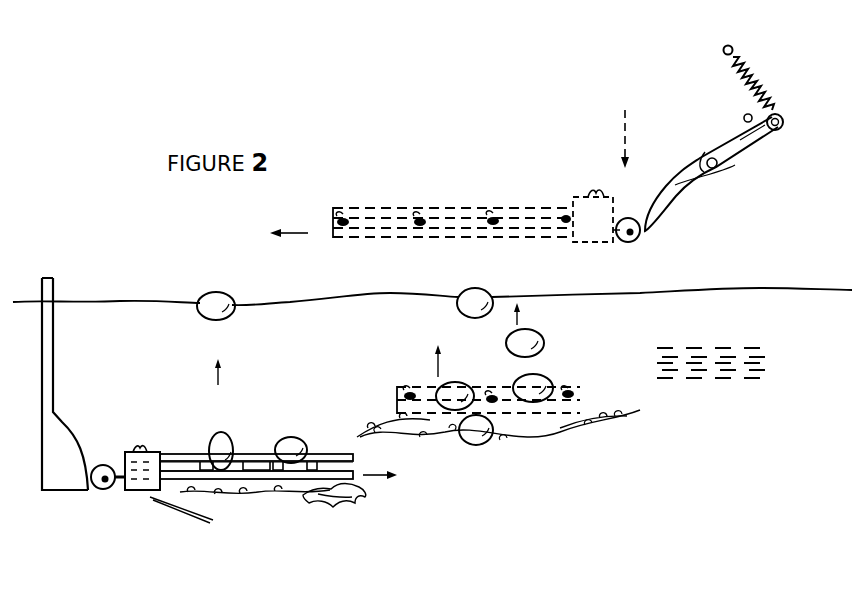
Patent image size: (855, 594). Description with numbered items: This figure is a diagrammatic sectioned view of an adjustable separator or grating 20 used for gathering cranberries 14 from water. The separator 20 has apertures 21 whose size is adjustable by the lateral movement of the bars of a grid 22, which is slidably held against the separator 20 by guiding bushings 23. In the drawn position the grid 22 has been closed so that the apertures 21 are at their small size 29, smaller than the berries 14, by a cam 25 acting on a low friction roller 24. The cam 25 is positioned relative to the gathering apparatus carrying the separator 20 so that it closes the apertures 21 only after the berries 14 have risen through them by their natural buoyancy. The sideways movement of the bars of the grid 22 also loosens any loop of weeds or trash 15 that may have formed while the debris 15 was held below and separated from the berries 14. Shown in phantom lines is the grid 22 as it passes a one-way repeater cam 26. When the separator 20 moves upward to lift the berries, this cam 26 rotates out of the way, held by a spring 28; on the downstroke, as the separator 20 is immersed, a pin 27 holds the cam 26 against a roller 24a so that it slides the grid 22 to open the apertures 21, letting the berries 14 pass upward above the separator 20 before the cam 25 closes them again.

The cranberries 14 is at (230, 320).
The weeds or trash 15 is at (338, 500).
The separator 20 is at (170, 440).
The apertures 21 is at (455, 222).
The grid 22 is at (175, 460).
The guiding bushings 23 is at (138, 488).
The low friction roller 24 is at (98, 491).
The roller 24a is at (636, 241).
The cam 25 is at (82, 477).
The one-way repeater cam 26 is at (660, 193).
The pin 27 is at (744, 119).
The spring 28 is at (762, 83).
The small size 29 is at (292, 468).